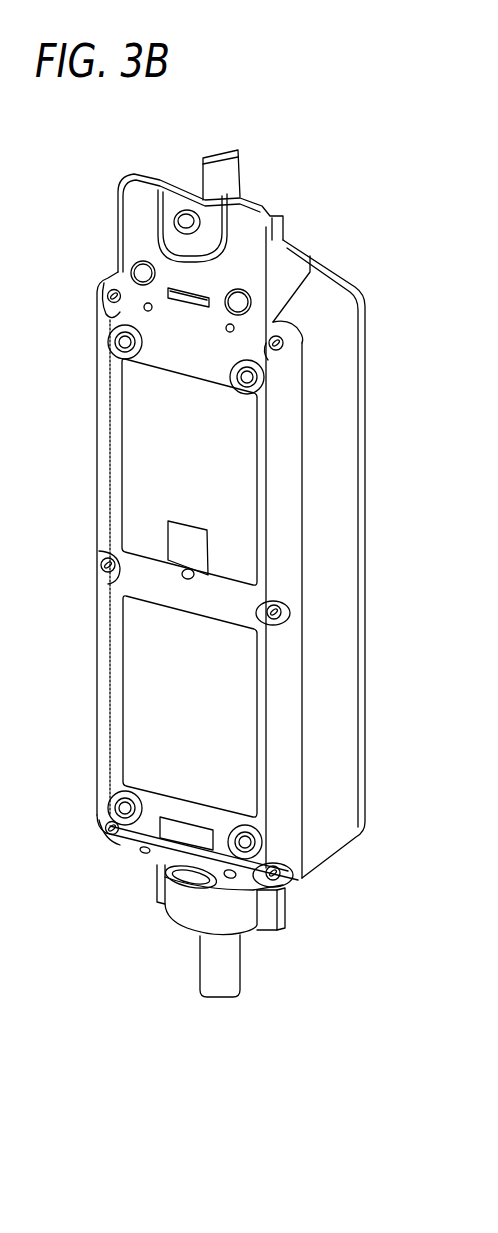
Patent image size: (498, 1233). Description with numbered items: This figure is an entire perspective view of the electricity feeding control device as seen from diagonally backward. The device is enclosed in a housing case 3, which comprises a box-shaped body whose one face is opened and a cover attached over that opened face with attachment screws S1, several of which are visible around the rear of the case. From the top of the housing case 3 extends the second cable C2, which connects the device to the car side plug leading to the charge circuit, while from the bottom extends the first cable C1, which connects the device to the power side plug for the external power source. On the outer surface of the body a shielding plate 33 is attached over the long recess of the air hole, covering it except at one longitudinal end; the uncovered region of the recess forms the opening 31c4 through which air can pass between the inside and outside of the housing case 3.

The housing case 3 is at (100, 412).
The shielding plate 33 is at (190, 537).
The opening 31c4 is at (189, 579).
The attachment screws S1 is at (104, 295).
The first cable C1 is at (212, 960).
The second cable C2 is at (232, 175).